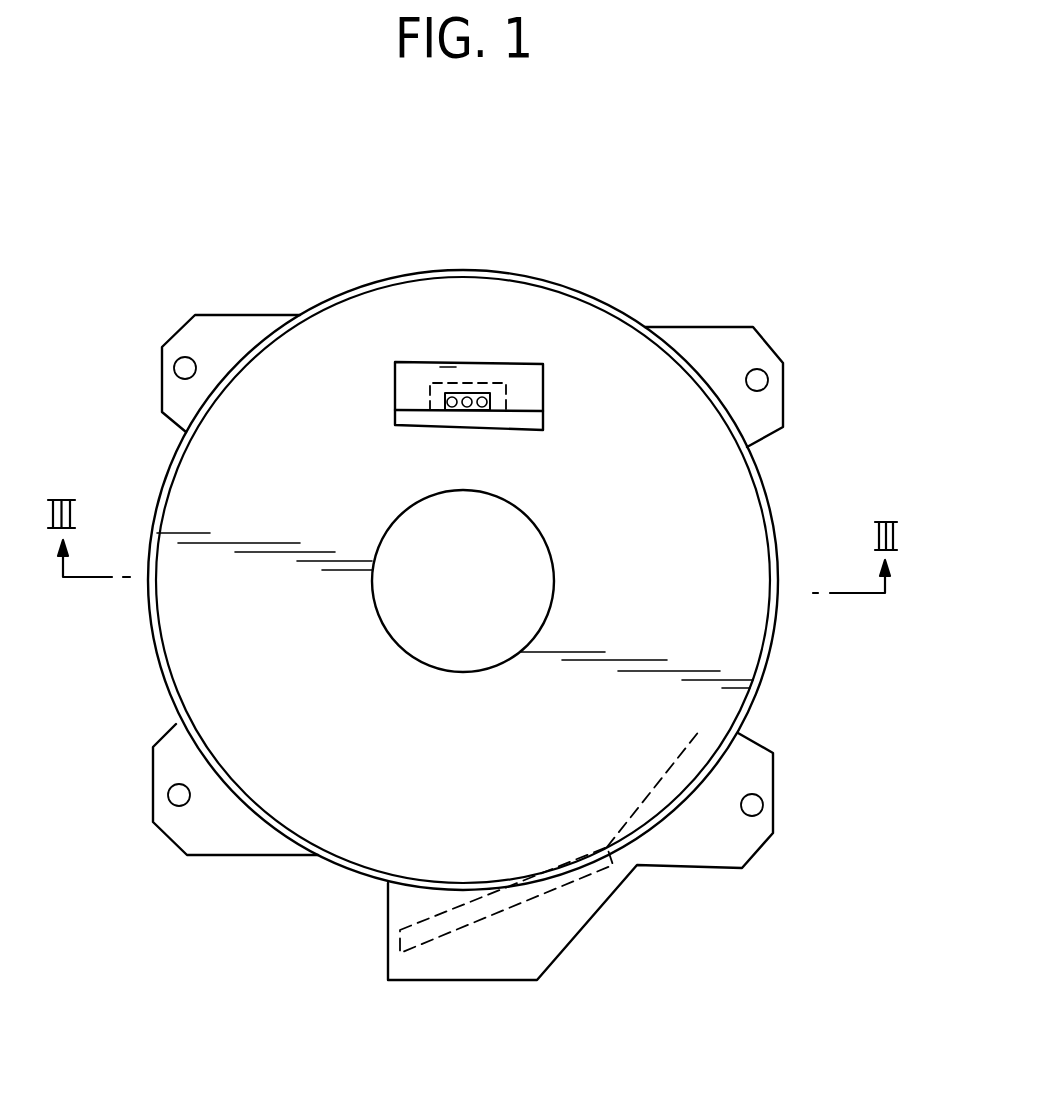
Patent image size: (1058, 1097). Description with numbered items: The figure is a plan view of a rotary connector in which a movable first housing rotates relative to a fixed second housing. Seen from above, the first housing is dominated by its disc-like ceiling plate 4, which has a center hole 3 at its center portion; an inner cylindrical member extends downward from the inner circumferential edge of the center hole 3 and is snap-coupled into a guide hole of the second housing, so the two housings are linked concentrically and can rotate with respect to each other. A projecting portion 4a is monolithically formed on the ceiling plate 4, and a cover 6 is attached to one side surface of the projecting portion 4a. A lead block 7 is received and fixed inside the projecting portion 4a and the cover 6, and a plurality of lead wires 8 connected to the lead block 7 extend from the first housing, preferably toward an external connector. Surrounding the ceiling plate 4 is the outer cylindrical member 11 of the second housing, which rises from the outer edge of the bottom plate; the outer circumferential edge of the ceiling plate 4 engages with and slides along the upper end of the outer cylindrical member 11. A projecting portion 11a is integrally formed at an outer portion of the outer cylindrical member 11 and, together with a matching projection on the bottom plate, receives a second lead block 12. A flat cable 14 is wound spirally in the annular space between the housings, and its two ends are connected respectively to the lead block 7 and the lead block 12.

The center hole 3 is at (532, 595).
The ceiling plate 4 is at (263, 665).
The projecting portion 4a is at (448, 367).
The cover 6 is at (537, 420).
The lead block 7 is at (432, 380).
The lead wires 8 is at (483, 397).
The outer cylindrical member 11 is at (155, 657).
The projecting portion 11a is at (402, 912).
The lead block 12 is at (446, 924).
The flat cable 14 is at (673, 770).